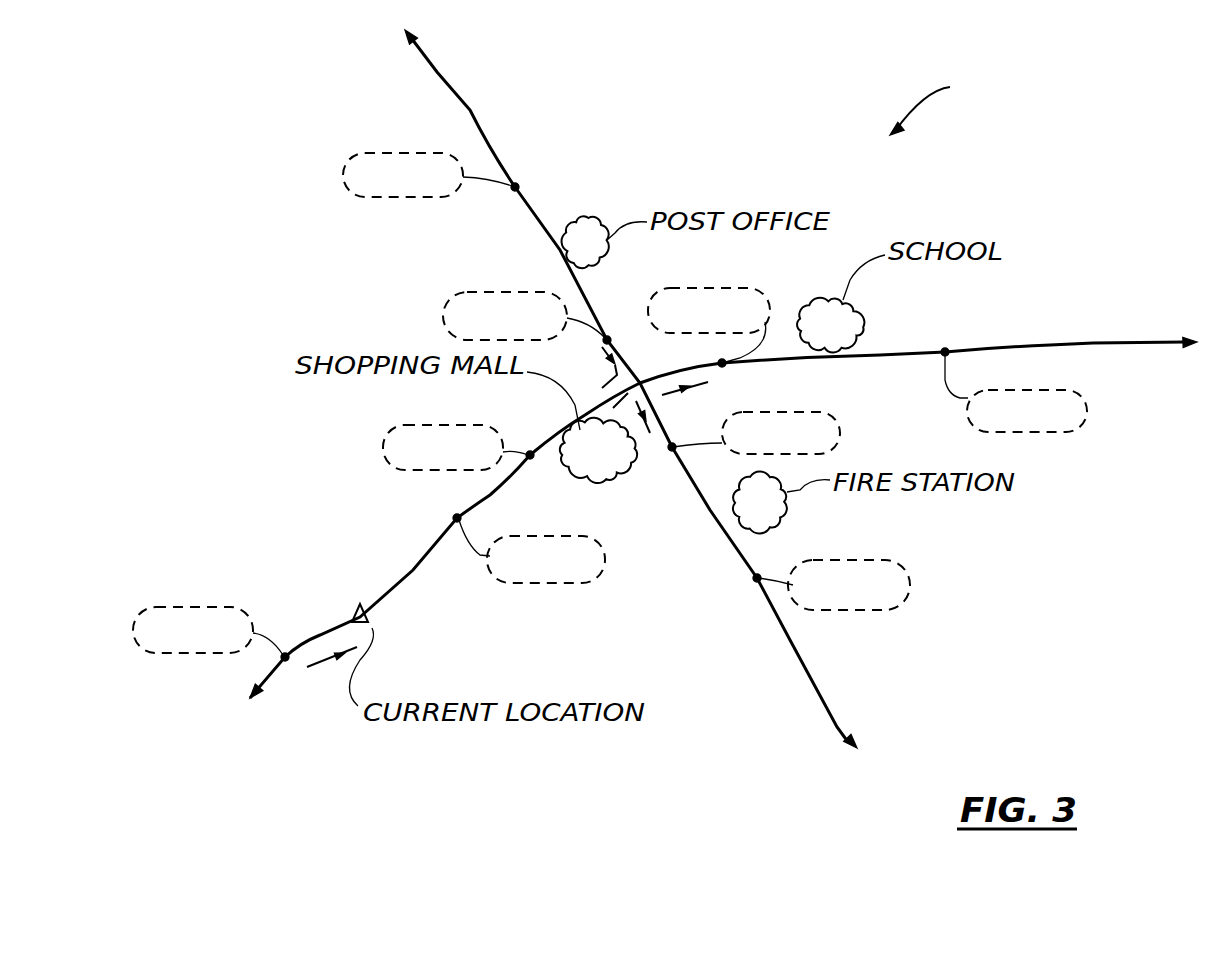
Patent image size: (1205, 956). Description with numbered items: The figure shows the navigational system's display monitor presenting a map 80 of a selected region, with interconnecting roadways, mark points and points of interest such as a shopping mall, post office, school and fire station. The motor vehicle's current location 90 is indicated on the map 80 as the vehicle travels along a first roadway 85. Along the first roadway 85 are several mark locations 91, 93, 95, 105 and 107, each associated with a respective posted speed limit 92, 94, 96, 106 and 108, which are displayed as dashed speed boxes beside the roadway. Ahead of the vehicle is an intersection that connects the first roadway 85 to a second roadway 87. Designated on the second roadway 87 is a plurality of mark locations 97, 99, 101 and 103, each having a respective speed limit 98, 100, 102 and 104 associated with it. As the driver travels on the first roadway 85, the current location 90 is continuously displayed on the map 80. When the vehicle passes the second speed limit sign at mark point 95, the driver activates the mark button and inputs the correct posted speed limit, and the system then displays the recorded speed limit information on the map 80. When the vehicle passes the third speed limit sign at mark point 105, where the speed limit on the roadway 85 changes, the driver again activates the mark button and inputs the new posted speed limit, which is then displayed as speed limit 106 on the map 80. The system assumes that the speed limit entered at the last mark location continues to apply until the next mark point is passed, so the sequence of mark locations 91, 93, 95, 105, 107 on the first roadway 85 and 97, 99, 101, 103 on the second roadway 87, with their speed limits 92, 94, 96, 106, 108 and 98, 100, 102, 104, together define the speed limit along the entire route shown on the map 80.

The map 80 is at (941, 103).
The first roadway 85 is at (413, 570).
The second roadway 87 is at (437, 72).
The current location 90 is at (355, 612).
The mark location 91 is at (283, 660).
The speed limit 92 is at (192, 605).
The mark location 93 is at (455, 516).
The speed limit 94 is at (593, 568).
The mark location 95 is at (532, 452).
The speed limit 96 is at (400, 430).
The mark location 97 is at (673, 445).
The speed limit 98 is at (810, 415).
The mark location 99 is at (605, 338).
The speed limit 100 is at (462, 293).
The mark location 101 is at (755, 578).
The speed limit 102 is at (850, 560).
The mark location 103 is at (515, 187).
The speed limit 104 is at (385, 157).
The mark location 105 is at (722, 365).
The speed limit 106 is at (672, 292).
The mark location 107 is at (968, 318).
The speed limit 108 is at (1070, 392).